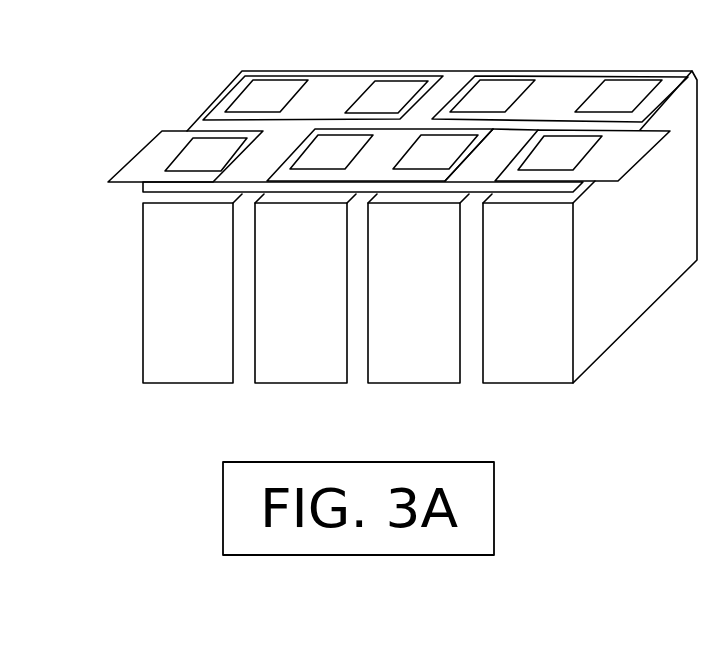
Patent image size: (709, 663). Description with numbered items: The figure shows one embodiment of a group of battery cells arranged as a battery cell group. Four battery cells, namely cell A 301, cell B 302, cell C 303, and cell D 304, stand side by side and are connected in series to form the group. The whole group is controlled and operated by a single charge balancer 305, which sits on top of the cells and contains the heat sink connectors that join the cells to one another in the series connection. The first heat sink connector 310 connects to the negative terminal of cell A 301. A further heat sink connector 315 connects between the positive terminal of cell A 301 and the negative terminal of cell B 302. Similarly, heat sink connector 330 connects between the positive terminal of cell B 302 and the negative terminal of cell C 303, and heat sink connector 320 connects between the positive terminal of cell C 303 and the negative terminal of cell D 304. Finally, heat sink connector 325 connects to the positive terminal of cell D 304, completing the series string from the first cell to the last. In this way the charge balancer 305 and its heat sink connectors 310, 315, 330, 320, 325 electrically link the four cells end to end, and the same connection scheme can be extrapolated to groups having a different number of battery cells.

The cell A 301 is at (190, 384).
The cell B 302 is at (303, 384).
The cell C 303 is at (416, 384).
The cell D 304 is at (538, 384).
The charge balancer 305 is at (148, 195).
The first heat sink connector 310 is at (142, 150).
The heat sink connector 315 is at (316, 53).
The heat sink connector 320 is at (549, 77).
The heat sink connector 325 is at (641, 158).
The heat sink connector 330 is at (447, 174).